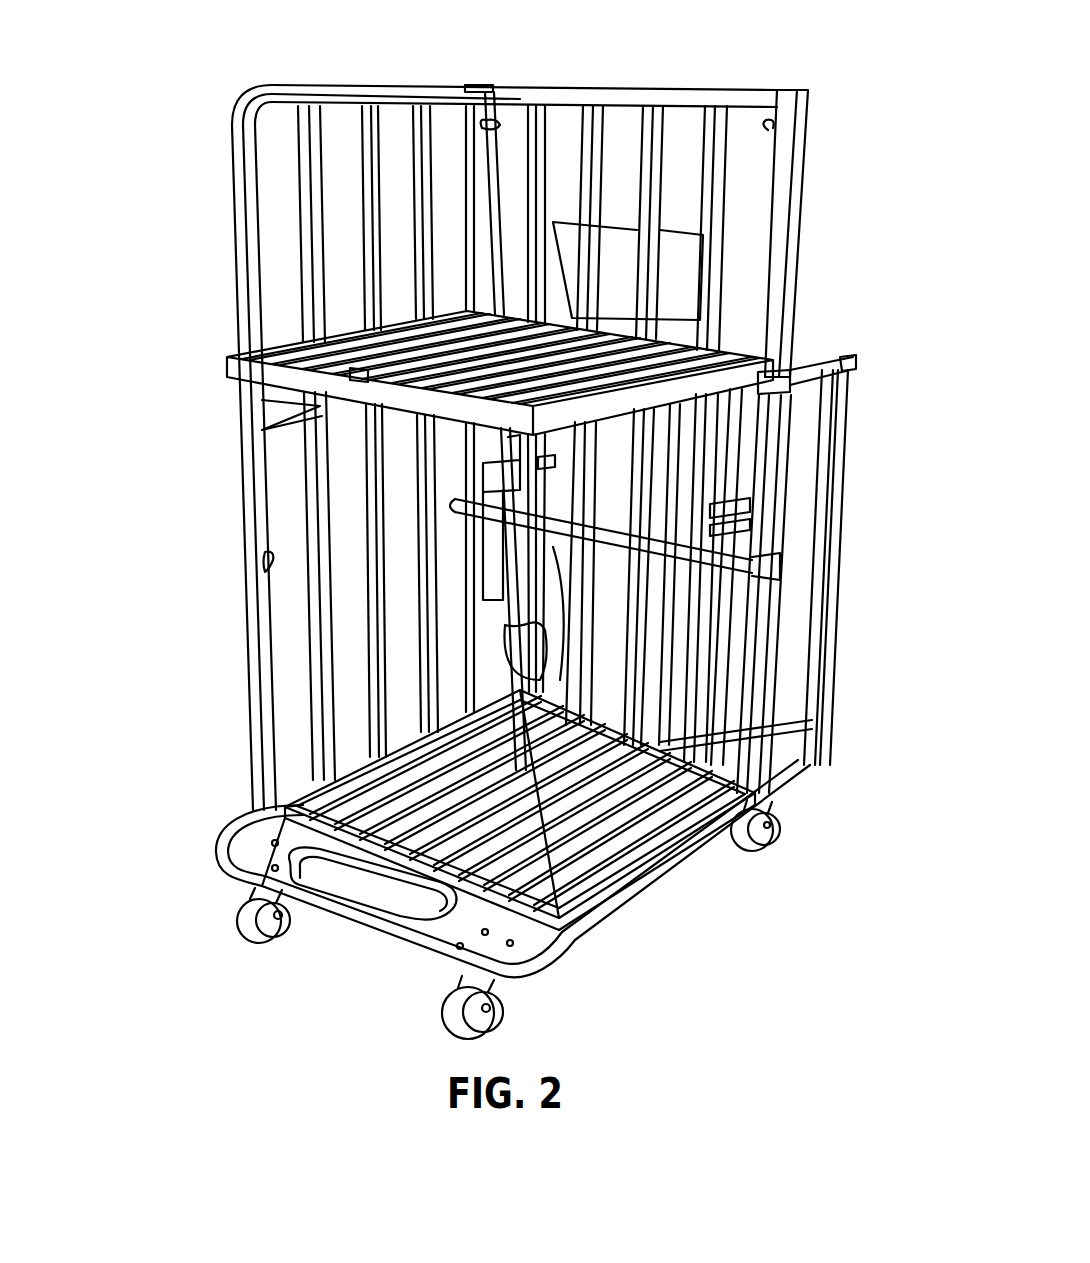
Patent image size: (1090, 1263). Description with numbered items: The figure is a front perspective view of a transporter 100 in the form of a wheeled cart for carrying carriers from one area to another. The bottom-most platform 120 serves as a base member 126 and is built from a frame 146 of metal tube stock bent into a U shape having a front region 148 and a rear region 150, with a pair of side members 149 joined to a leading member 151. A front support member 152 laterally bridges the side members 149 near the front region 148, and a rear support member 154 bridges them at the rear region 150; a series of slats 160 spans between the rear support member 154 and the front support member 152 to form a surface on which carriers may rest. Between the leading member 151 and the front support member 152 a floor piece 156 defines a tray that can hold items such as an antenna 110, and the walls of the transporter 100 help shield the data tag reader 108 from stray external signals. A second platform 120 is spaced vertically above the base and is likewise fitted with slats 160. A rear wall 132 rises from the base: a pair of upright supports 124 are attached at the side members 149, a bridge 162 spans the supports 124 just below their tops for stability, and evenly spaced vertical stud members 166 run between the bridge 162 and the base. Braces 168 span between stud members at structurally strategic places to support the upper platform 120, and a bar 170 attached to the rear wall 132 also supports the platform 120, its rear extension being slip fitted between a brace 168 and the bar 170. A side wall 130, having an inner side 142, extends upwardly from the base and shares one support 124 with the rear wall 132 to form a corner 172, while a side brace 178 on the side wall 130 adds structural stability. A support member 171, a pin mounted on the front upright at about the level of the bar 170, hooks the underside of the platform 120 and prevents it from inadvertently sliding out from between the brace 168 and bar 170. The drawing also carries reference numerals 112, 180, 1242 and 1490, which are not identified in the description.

The transporter 100 is at (234, 74).
The data tag reader 108 is at (545, 578).
The antenna 110 is at (364, 904).
The stop bracket 112 is at (693, 303).
The platform 120 is at (240, 346).
The vertical supports 124 is at (798, 226).
The base member 126 is at (588, 815).
The side wall 130 is at (337, 80).
The rear wall 132 is at (686, 88).
The inner side 142 is at (430, 120).
The frame 146 is at (597, 942).
The front region 148 is at (406, 960).
The side members 149 is at (300, 793).
The rear region 150 is at (670, 740).
The leading member 151 is at (262, 397).
The front support member 152 is at (538, 910).
The rear support member 154 is at (762, 815).
The floor piece 156 is at (253, 847).
The slats 160 is at (606, 900).
The bridge 162 is at (748, 100).
The stud members 166 is at (590, 120).
The brace 168 is at (752, 515).
The bar 170 is at (787, 557).
The support member 171 is at (262, 564).
The corner 172 is at (483, 82).
The side brace 178 is at (280, 425).
The corner bracket 180 is at (852, 375).
The left post 1242 is at (234, 243).
The support bracket 1490 is at (355, 362).